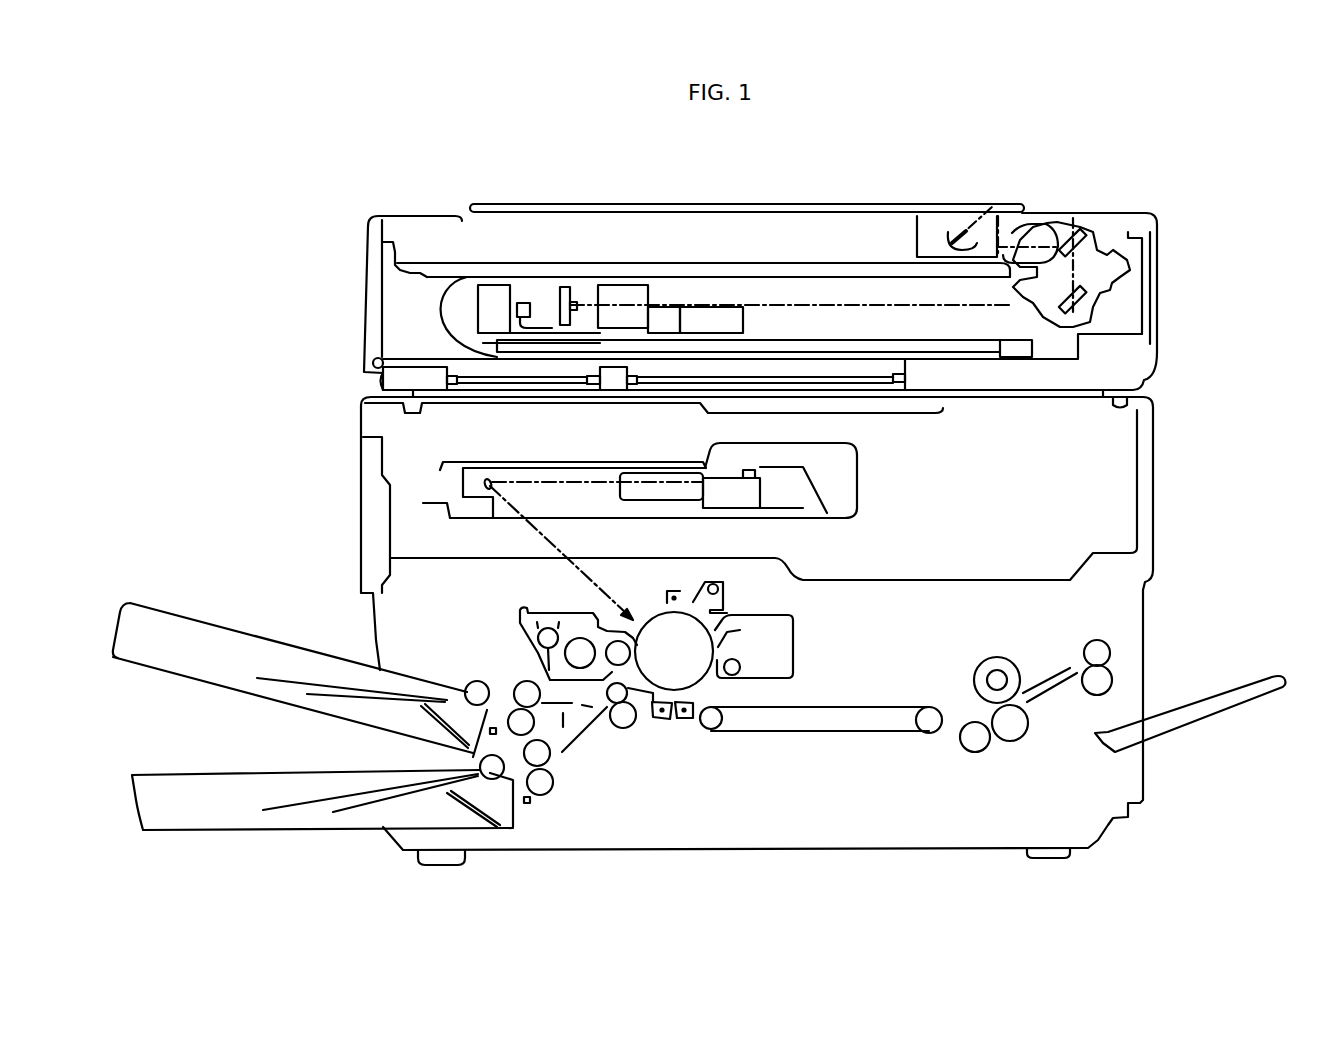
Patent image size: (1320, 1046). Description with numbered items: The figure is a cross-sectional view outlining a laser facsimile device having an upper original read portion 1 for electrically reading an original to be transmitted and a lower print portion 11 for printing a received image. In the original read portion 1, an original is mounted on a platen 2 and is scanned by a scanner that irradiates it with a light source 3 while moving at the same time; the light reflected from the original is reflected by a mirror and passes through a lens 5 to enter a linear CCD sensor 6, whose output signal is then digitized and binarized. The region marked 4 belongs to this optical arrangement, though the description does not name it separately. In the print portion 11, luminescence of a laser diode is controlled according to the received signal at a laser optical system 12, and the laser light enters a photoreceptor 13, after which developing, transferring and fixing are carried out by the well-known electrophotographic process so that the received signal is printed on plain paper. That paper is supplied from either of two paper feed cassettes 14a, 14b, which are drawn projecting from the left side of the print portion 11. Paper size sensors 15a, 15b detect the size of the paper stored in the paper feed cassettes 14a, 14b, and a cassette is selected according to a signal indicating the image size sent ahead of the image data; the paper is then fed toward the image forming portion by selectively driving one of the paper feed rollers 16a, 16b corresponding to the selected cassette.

The original read portion 1 is at (802, 271).
The platen 2 is at (980, 205).
The light source 3 is at (953, 240).
The lens unit 4 is at (917, 240).
The lens 5 is at (618, 285).
The linear CCD sensor 6 is at (577, 302).
The print portion 11 is at (1170, 462).
The laser optical system 12 is at (852, 477).
The photoreceptor 13 is at (663, 665).
The paper feed cassette 14a is at (192, 635).
The paper feed cassette 14b is at (203, 790).
The paper size sensor 15a is at (503, 711).
The paper size sensor 15b is at (533, 800).
The paper feed roller 16a is at (470, 683).
The paper feed roller 16b is at (478, 757).